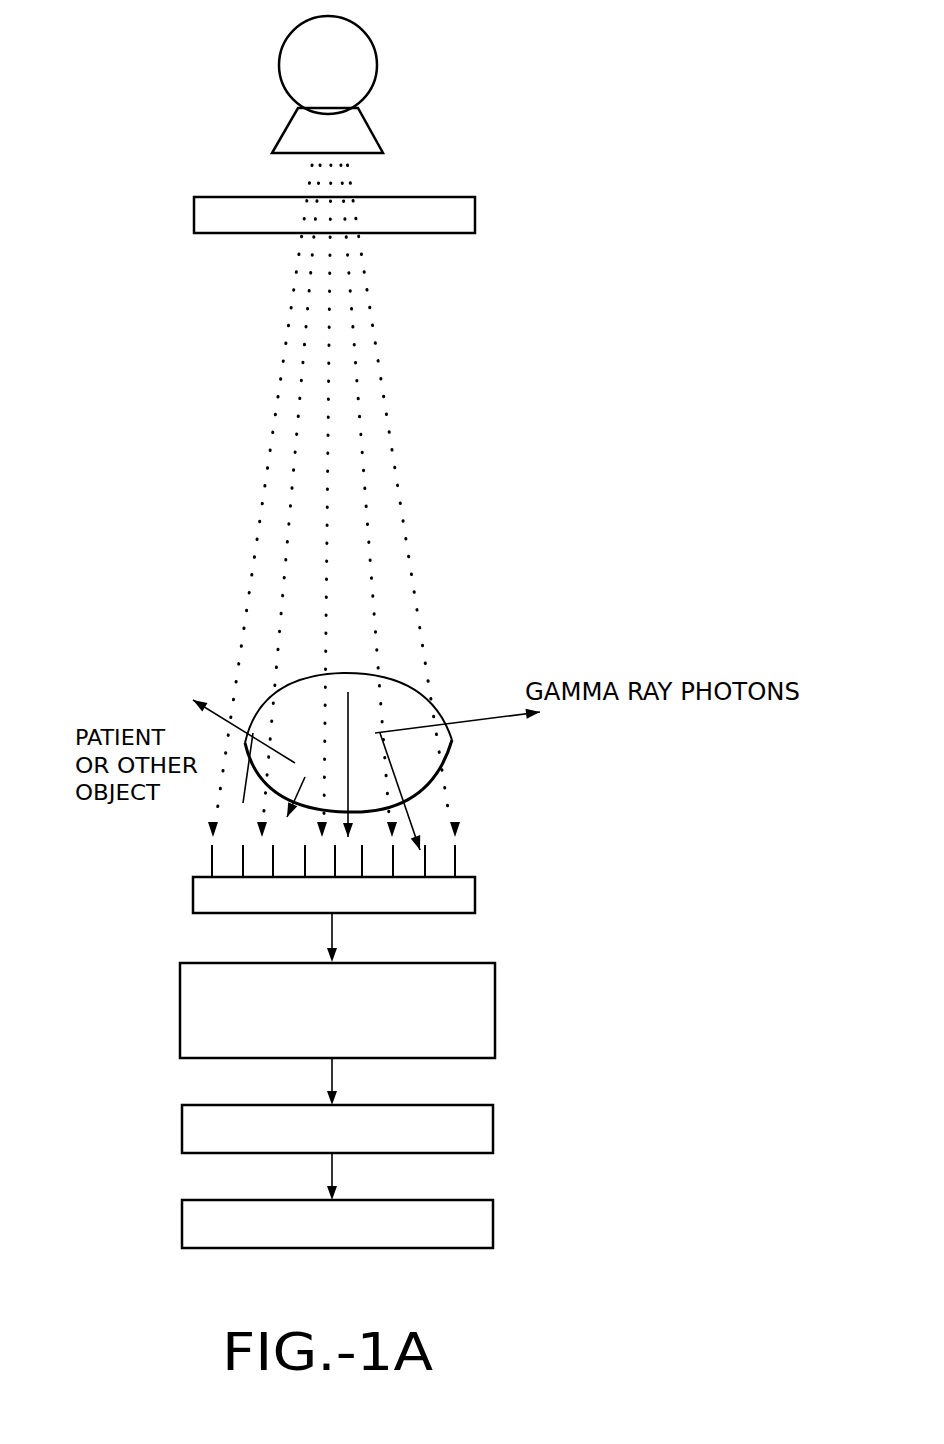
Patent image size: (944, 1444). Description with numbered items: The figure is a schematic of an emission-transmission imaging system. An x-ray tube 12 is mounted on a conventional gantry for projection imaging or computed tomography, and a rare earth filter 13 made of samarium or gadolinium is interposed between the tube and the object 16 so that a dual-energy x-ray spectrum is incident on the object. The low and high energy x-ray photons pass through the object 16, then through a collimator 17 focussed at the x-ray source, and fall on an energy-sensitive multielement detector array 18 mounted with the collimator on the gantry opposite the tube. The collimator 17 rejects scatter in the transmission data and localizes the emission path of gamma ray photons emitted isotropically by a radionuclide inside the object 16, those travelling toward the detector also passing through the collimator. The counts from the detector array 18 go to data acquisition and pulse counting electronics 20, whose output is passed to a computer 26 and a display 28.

The x-ray tube 12 is at (282, 48).
The rare earth filter 13 is at (193, 217).
The object 16 is at (243, 637).
The collimator 17 is at (212, 858).
The multielement detector array 18 is at (193, 900).
The data acquisition and pulse counting electronics 20 is at (180, 1002).
The computer 26 is at (182, 1130).
The display 28 is at (182, 1225).